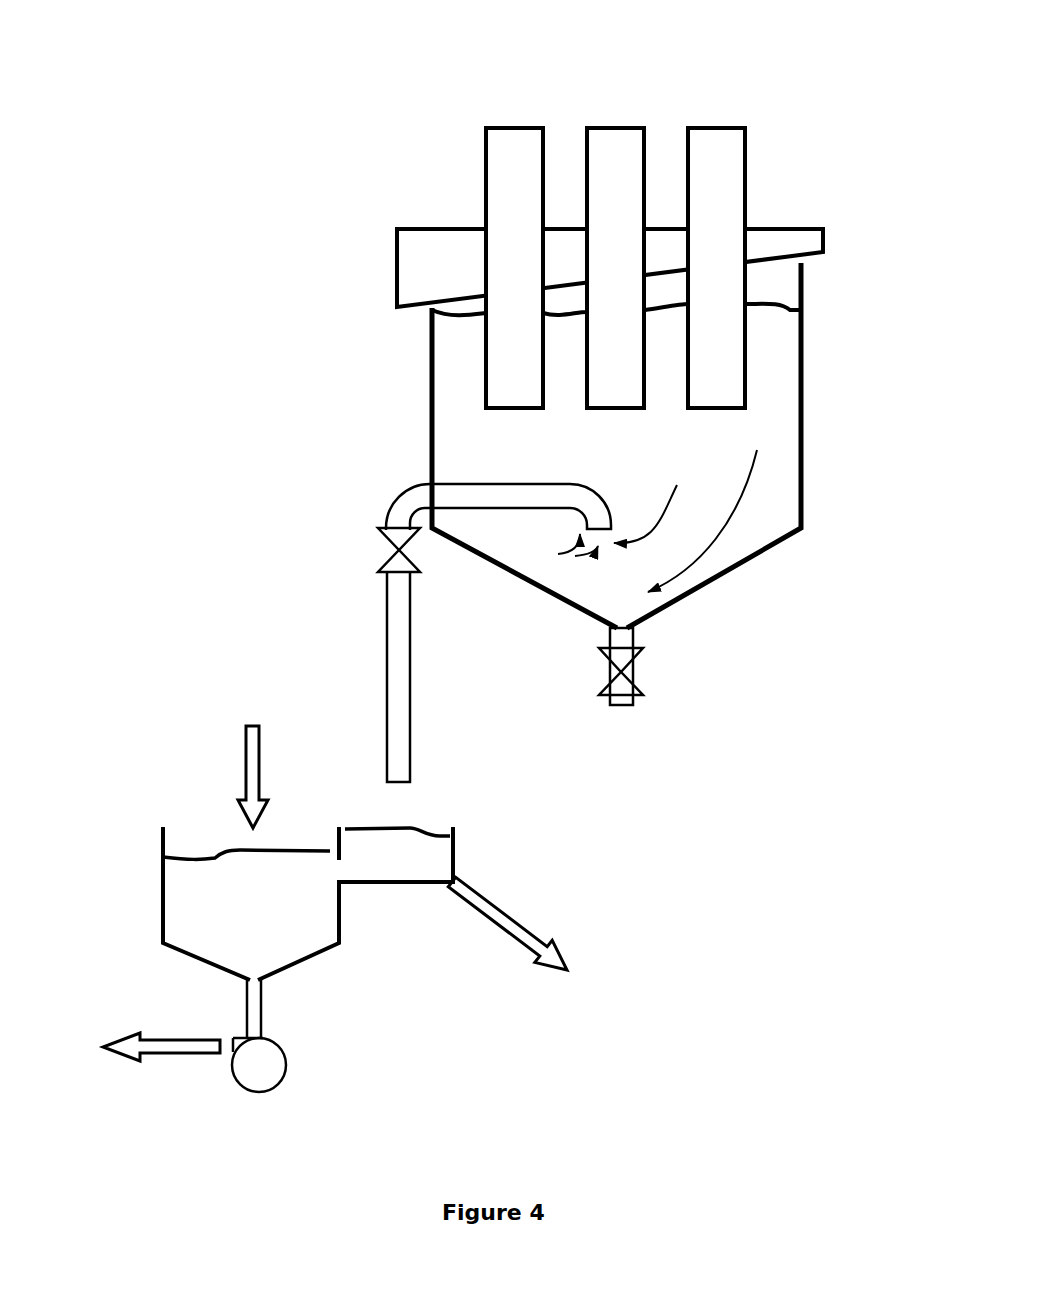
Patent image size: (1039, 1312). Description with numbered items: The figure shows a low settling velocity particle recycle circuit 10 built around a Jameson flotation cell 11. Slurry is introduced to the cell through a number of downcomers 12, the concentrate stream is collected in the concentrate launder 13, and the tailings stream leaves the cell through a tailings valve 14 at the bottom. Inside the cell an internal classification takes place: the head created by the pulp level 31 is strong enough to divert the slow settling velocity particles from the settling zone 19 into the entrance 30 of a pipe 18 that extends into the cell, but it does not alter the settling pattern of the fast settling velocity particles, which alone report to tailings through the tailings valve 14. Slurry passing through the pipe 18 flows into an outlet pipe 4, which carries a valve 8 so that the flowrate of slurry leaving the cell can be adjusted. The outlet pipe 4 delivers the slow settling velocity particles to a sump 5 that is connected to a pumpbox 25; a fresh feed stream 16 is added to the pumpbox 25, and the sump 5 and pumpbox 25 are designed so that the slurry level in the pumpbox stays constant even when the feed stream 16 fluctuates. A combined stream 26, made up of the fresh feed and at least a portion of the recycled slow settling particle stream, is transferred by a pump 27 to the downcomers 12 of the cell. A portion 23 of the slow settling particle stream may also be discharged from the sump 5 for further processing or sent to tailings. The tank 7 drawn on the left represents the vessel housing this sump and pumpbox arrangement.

The low settling velocity particle recycle circuit 10 is at (802, 203).
The concentrate launder 13 is at (400, 213).
The downcomers 12 is at (710, 117).
The pulp level 31 is at (788, 312).
The Jameson flotation cell 11 is at (768, 438).
The settling zone 19 is at (702, 505).
The entrance 30 is at (576, 534).
The pipe 18 is at (488, 480).
The valve 8 is at (377, 537).
The outlet pipe 4 is at (375, 627).
The tailings valve 14 is at (637, 673).
The fresh feed stream 16 is at (237, 748).
The settling tank 7 is at (128, 917).
The sump 5 is at (410, 862).
The pumpbox 25 is at (299, 907).
The portion of stream 23 is at (502, 892).
The combined stream 26 is at (132, 1053).
The pump 27 is at (267, 1072).